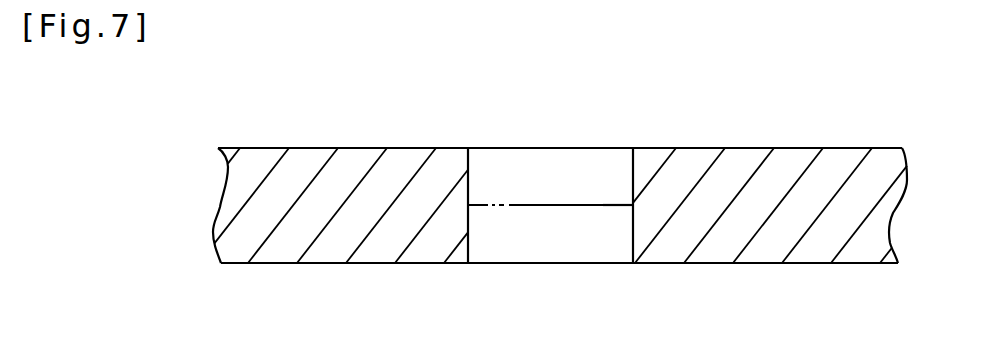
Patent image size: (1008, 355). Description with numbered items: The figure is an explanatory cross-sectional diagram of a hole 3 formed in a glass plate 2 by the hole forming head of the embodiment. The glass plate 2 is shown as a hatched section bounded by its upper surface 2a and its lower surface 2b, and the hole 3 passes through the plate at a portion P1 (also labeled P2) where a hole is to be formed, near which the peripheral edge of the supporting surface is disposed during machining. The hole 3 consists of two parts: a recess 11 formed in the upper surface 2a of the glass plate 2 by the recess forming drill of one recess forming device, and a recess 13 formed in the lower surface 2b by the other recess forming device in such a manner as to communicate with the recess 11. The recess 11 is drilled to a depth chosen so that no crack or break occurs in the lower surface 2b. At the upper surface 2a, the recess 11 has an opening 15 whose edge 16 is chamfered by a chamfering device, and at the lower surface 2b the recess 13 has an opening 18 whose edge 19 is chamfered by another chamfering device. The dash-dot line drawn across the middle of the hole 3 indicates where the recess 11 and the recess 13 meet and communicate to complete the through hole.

The glass plate 2 is at (305, 160).
The upper surface 2a is at (363, 150).
The lower surface 2b is at (355, 264).
The edge 16 is at (470, 148).
The opening 15 is at (510, 148).
The recess 11 is at (549, 153).
The hole 3 is at (575, 153).
The portion P1 is at (607, 153).
The recess 13 is at (520, 253).
The opening 18 is at (575, 265).
The edge 19 is at (635, 264).